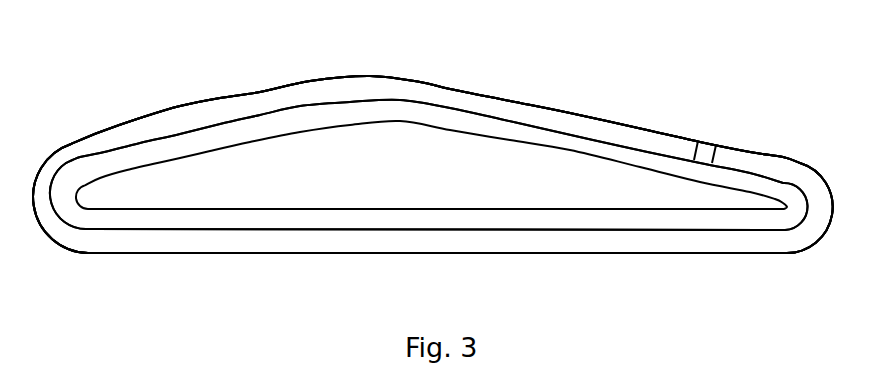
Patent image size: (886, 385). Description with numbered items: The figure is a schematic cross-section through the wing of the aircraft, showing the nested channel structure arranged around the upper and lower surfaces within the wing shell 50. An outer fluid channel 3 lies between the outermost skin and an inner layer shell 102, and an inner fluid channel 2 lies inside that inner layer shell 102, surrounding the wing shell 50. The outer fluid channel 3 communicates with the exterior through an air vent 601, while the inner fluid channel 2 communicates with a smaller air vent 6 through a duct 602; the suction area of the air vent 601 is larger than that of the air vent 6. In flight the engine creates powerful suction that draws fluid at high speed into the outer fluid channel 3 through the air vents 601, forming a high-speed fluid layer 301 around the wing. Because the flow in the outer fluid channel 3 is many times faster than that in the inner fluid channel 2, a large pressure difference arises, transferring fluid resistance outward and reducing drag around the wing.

The outer fluid channel 3 is at (420, 95).
The high-speed fluid layer 301 is at (289, 82).
The air vent 601 is at (587, 117).
The air vent 6 is at (640, 127).
The inner fluid channel 2 is at (472, 124).
The inner layer shell 102 is at (535, 124).
The wing shell 50 is at (172, 193).
The duct 602 is at (705, 147).